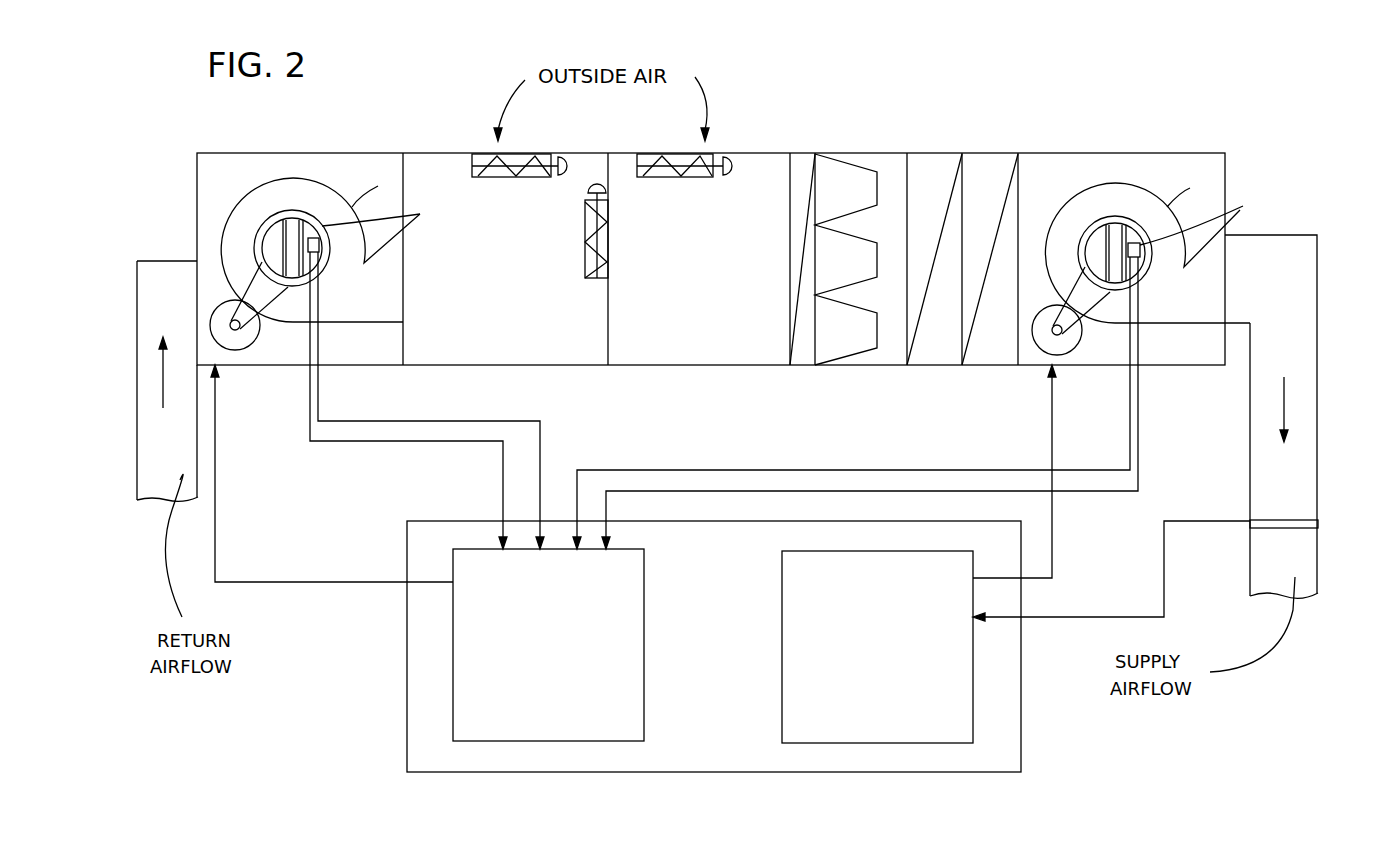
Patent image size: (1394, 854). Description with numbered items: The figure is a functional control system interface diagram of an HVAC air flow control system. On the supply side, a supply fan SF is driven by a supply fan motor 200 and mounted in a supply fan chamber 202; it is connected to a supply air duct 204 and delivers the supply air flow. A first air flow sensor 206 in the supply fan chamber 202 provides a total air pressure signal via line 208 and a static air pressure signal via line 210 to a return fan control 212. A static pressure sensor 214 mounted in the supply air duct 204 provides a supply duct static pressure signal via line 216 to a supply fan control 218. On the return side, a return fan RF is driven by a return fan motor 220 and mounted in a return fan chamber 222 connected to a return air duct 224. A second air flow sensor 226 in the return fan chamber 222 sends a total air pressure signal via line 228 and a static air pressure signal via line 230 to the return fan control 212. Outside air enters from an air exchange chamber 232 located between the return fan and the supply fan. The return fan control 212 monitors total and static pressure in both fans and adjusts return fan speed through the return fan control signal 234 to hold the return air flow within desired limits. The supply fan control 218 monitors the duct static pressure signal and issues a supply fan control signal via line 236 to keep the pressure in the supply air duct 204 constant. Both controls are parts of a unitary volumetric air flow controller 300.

The supply fan motor 200 is at (1080, 340).
The supply fan chamber 202 is at (1047, 163).
The supply air duct 204 is at (1318, 287).
The first air flow sensor 206 is at (1210, 224).
The line 208 is at (925, 468).
The line 210 is at (1008, 492).
The return fan control 212 is at (645, 660).
The static pressure sensor 214 is at (1313, 523).
The line 216 is at (1165, 590).
The supply fan control 218 is at (782, 633).
The return fan motor 220 is at (258, 338).
The return fan chamber 222 is at (252, 158).
The return air duct 224 is at (157, 260).
The second air flow sensor 226 is at (420, 214).
The line 228 is at (540, 452).
The line 230 is at (503, 488).
The air exchange chamber 232 is at (587, 160).
The return fan control signal 234 is at (353, 582).
The line 236 is at (1052, 553).
The unitary volumetric air flow controller 300 is at (407, 729).